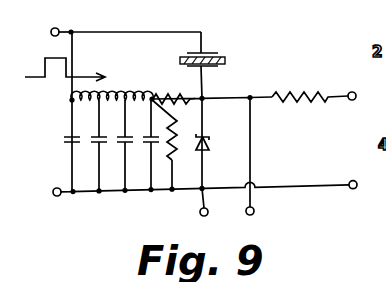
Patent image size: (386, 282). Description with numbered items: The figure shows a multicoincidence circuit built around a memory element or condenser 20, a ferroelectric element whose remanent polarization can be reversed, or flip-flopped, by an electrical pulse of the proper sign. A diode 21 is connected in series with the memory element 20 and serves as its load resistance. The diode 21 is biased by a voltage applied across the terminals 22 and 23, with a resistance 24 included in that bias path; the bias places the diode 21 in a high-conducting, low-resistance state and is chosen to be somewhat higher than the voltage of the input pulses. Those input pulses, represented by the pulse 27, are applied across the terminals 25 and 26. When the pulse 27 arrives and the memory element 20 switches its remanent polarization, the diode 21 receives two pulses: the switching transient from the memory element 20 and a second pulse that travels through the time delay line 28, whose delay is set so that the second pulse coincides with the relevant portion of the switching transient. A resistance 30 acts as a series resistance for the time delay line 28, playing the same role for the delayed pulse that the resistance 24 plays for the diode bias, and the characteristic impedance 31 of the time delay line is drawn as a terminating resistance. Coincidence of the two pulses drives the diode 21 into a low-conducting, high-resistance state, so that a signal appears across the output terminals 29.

The memory element or condenser 20 is at (222, 59).
The diode 21 is at (209, 143).
The terminal 22 is at (354, 100).
The terminal 23 is at (353, 189).
The resistance 24 is at (306, 112).
The terminal 25 is at (51, 40).
The terminal 26 is at (54, 197).
The pulse 27 is at (57, 79).
The time delay line 28 is at (111, 116).
The output terminals 29 is at (247, 207).
The resistance 30 is at (184, 92).
The characteristic impedance 31 is at (196, 164).